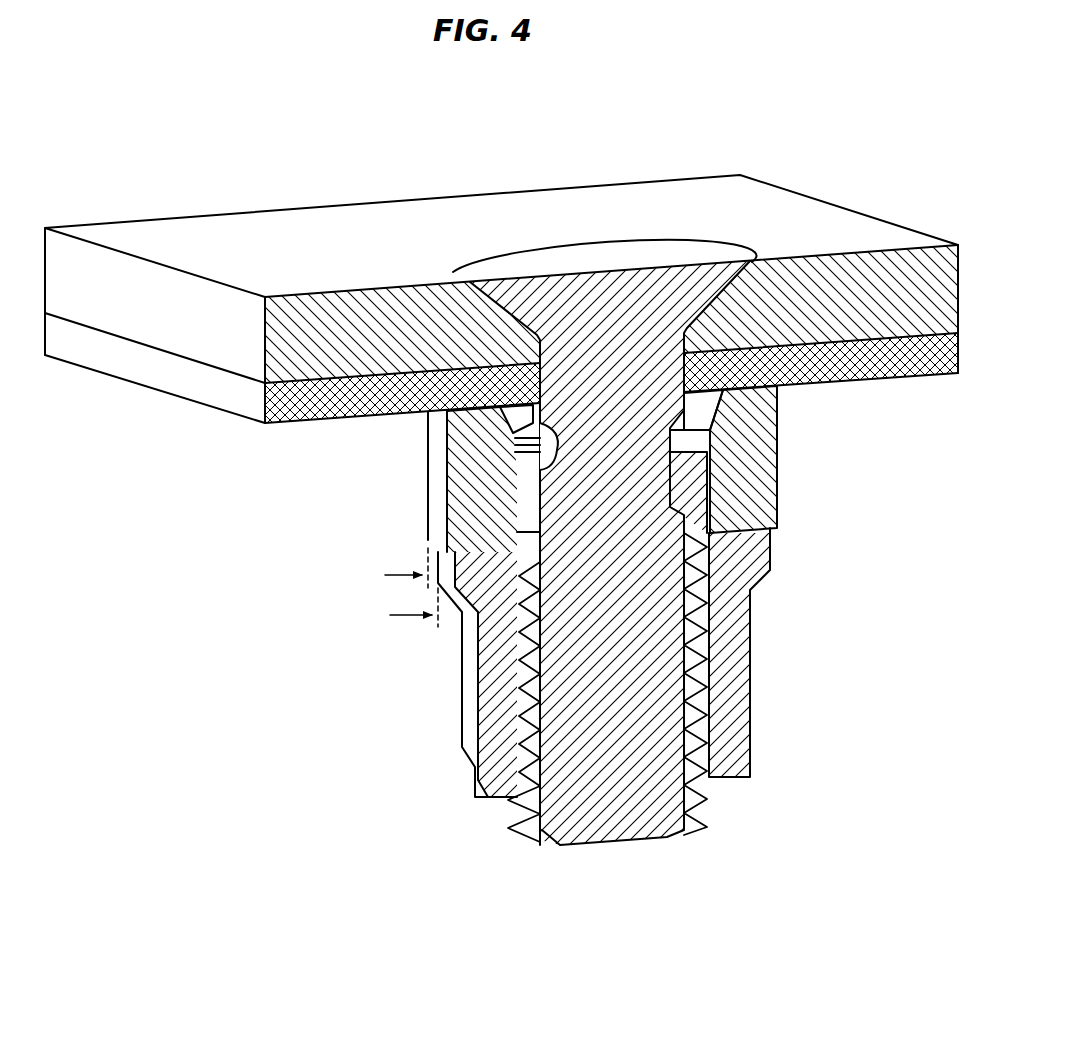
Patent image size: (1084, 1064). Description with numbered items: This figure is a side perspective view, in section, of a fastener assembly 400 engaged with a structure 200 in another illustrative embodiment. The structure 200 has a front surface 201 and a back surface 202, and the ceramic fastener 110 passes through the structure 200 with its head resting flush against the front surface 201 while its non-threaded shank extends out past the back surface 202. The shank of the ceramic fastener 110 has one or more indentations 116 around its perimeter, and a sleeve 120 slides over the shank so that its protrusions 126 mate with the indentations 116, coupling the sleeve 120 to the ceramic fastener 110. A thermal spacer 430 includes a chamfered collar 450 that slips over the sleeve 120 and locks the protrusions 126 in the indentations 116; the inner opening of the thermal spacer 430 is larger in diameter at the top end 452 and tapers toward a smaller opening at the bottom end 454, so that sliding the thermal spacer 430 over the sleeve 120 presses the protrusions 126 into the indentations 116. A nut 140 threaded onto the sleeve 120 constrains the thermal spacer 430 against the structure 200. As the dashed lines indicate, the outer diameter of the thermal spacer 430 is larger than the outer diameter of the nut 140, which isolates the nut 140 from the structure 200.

The structure 200 is at (501, 495).
The front surface 201 is at (200, 232).
The back surface 202 is at (287, 434).
The fastener assembly 400 is at (501, 586).
The ceramic fastener 110 is at (592, 586).
The sleeve 120 is at (496, 826).
The nut 140 is at (446, 700).
The thermal spacer 430 is at (434, 601).
The indentations 116 is at (533, 452).
The protrusions 126 is at (515, 532).
The chamfered collar 450 is at (763, 578).
The top end 452 is at (760, 380).
The bottom end 454 is at (777, 530).